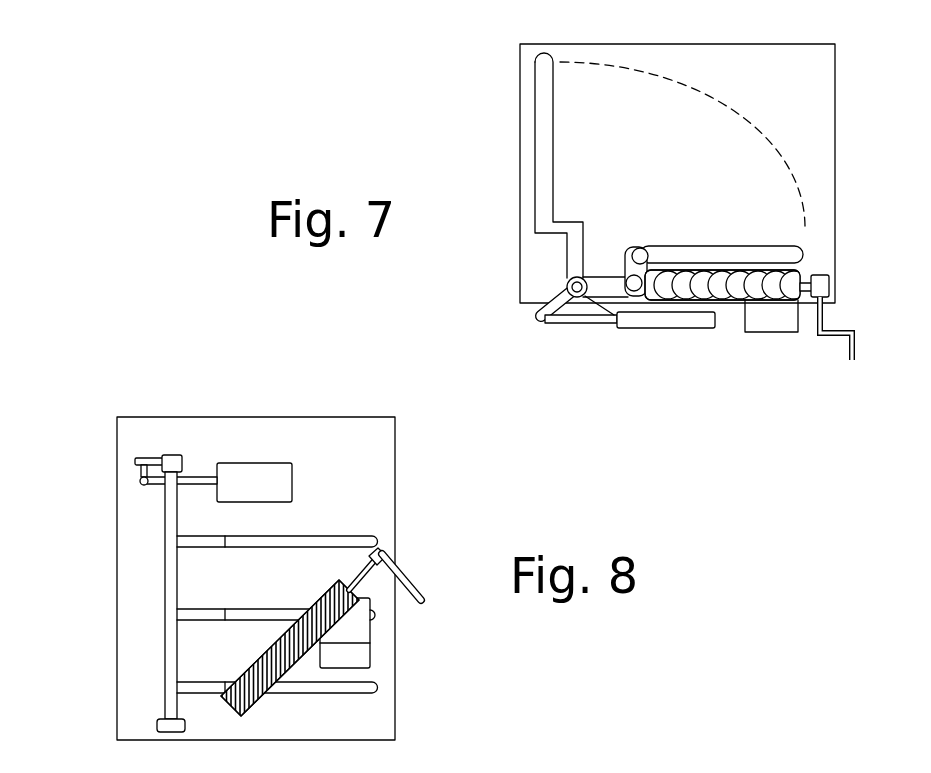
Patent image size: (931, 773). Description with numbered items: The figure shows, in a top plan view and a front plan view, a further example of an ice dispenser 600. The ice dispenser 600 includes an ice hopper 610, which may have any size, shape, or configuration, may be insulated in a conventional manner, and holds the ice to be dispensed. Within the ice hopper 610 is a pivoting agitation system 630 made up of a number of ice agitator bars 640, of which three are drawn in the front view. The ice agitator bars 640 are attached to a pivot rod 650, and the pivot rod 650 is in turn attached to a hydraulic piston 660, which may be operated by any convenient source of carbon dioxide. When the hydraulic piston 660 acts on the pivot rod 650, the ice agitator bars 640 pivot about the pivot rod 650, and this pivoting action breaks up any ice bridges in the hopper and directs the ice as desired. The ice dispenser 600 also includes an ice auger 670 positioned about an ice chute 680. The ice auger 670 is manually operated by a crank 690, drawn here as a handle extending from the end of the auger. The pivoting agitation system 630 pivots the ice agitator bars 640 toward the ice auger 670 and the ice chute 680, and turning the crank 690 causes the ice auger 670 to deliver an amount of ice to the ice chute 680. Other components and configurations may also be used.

In FIG. 7, the ice dispenser 600 is at (484, 64).
In FIG. 8, the ice dispenser 600 is at (85, 378).
In FIG. 7, the ice hopper 610 is at (836, 78).
In FIG. 8, the ice hopper 610 is at (396, 466).
In FIG. 7, the pivoting agitation system 630 is at (528, 329).
In FIG. 7, the ice agitator bars 640 is at (749, 246).
In FIG. 8, the ice agitator bars 640 is at (334, 537).
In FIG. 7, the pivot rod 650 is at (600, 275).
In FIG. 8, the pivot rod 650 is at (165, 518).
In FIG. 7, the hydraulic piston 660 is at (622, 329).
In FIG. 8, the hydraulic piston 660 is at (256, 462).
In FIG. 7, the ice auger 670 is at (728, 303).
In FIG. 8, the ice auger 670 is at (256, 702).
In FIG. 7, the ice chute 680 is at (782, 334).
In FIG. 8, the ice chute 680 is at (363, 669).
In FIG. 7, the crank 690 is at (838, 330).
In FIG. 8, the crank 690 is at (410, 583).